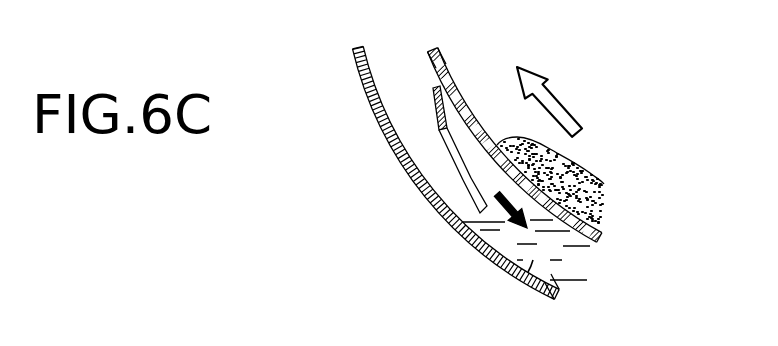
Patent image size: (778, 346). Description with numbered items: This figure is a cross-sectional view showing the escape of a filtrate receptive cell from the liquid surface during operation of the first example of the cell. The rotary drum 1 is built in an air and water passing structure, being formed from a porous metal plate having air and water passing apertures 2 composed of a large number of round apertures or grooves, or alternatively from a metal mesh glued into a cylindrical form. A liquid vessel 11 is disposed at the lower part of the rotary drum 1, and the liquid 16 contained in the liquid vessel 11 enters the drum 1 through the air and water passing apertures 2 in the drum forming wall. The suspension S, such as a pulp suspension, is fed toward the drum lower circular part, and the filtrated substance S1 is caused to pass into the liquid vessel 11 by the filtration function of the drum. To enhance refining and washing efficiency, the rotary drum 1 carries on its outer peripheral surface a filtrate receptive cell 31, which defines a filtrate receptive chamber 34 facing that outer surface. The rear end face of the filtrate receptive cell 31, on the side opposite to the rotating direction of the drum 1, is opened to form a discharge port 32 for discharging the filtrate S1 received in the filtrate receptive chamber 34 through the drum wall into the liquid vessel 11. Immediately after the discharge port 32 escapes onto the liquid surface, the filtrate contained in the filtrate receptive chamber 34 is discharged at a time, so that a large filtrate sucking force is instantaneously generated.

The rotary drum 1 is at (431, 63).
The air and water passing apertures 2 is at (477, 113).
The liquid vessel 11 is at (366, 98).
The liquid 16 is at (513, 287).
The filtrate receptive cell 31 is at (437, 130).
The discharge port 32 is at (479, 206).
The filtrate receptive chamber 34 is at (473, 165).
The suspension S is at (581, 165).
The filtrated substance S1 is at (512, 226).